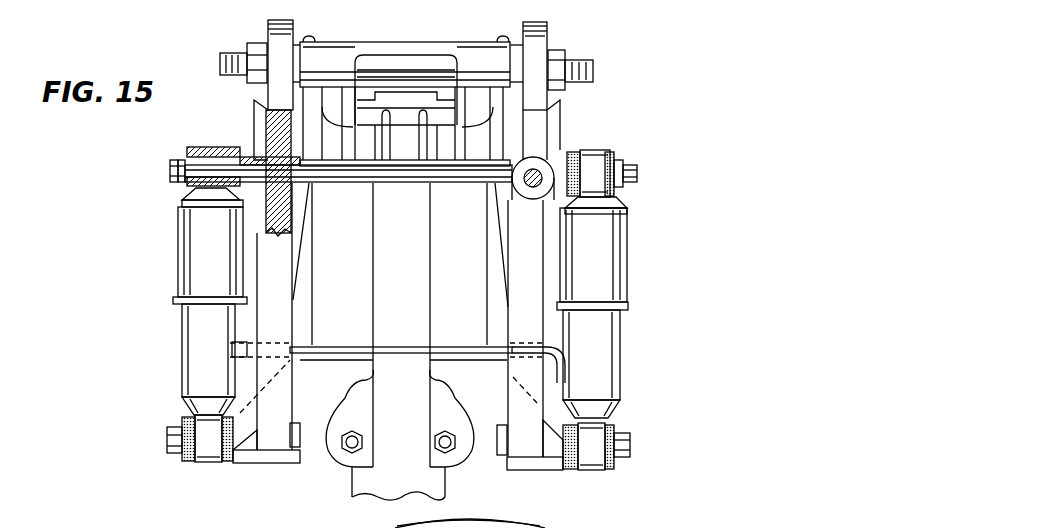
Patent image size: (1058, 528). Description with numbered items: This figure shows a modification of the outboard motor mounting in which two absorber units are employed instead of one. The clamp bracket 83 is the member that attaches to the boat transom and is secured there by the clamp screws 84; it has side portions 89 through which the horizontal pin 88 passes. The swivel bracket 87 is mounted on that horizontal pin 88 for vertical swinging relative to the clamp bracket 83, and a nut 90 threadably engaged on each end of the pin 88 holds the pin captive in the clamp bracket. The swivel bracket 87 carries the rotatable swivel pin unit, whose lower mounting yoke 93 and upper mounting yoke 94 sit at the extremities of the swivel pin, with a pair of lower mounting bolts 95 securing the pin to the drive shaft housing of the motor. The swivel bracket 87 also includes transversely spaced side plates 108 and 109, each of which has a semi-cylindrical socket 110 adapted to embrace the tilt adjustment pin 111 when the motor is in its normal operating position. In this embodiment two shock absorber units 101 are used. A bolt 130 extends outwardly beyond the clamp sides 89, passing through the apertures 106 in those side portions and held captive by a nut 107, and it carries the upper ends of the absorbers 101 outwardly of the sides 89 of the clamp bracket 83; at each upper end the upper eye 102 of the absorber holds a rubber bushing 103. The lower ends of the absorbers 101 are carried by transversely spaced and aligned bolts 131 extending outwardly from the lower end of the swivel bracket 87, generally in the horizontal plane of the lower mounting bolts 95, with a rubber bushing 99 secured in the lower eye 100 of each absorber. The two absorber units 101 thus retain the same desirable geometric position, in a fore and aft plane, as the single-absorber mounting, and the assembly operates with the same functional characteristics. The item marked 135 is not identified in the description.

The clamp bracket 83 is at (272, 38).
The clamp screws 84 is at (538, 168).
The swivel bracket 87 is at (478, 43).
The horizontal pin 88 is at (220, 63).
The side portions of the clamp bracket 89 is at (280, 312).
The nut 90 is at (253, 72).
The lower mounting yoke 93 is at (345, 470).
The upper mounting yoke 94 is at (435, 520).
The lower mounting bolts 95 is at (435, 442).
The rubber bushing 99 is at (185, 460).
The lower eye 100 is at (208, 455).
The shock absorber unit 101 is at (640, 312).
The upper eye 102 is at (207, 147).
The rubber bushing 103 is at (237, 157).
The apertures 106 is at (306, 185).
The nut 107 is at (182, 155).
The side plate 108 is at (310, 250).
The side plate 109 is at (487, 277).
The semi-cylindrical socket 110 is at (310, 345).
The tilt adjustment pin 111 is at (412, 345).
The bolt 130 is at (170, 167).
The bolts 131 is at (167, 438).
The wheel 135 is at (505, 526).